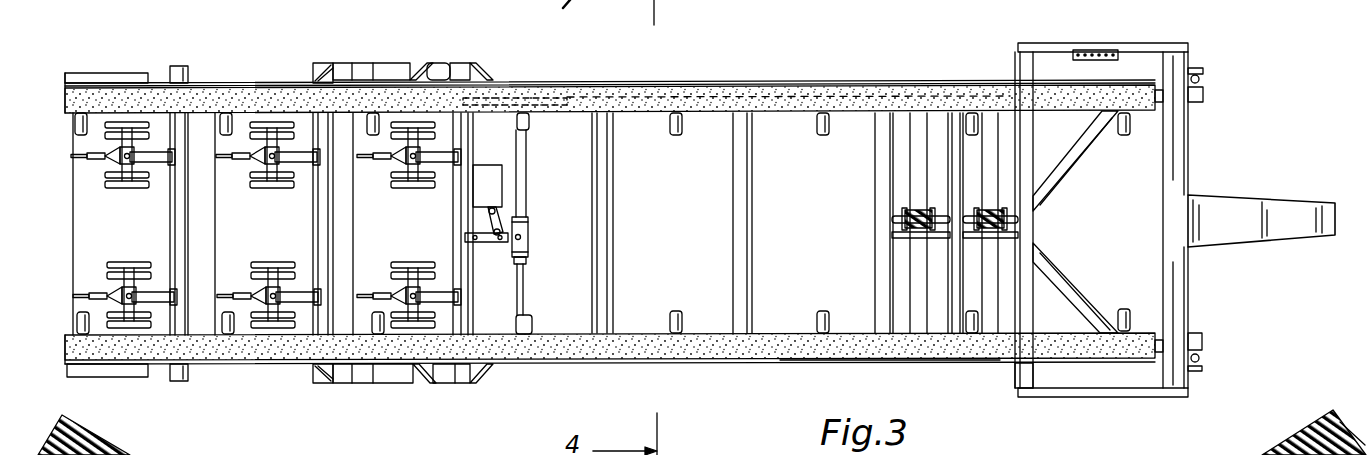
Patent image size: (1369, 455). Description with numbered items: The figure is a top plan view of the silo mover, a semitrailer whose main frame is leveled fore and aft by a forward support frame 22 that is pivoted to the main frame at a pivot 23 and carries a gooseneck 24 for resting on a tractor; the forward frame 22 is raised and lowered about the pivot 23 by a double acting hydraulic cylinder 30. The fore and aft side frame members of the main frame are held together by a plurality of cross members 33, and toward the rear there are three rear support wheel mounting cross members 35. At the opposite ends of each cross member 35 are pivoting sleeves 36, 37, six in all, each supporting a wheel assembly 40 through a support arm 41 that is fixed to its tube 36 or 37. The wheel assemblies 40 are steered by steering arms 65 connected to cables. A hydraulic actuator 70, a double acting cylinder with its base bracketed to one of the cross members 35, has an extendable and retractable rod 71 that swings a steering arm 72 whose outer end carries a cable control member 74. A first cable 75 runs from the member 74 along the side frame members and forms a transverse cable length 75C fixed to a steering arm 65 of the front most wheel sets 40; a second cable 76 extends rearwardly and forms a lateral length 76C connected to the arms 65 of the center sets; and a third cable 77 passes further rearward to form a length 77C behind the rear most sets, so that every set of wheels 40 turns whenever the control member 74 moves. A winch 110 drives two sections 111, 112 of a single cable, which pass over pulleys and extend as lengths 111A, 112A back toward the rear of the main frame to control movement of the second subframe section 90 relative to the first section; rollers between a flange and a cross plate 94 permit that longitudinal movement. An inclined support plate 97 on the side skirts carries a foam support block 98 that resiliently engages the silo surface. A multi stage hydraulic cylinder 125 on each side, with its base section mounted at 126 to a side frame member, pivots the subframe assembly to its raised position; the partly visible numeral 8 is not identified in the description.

The forward support frame 22 is at (1198, 134).
The pivot 23 is at (1023, 395).
The gooseneck 24 is at (1257, 239).
The double acting hydraulic cylinder 30 is at (1205, 78).
The cross members 33 is at (877, 188).
The rear support wheel mounting cross members 35 is at (170, 214).
The pivoting sleeve 36 is at (194, 160).
The pivoting sleeve 37 is at (195, 292).
The wheel assembly 40 is at (285, 112).
The support arm 41 is at (152, 160).
The steering arm 65 is at (78, 156).
The hydraulic actuator 70 is at (493, 219).
The extendable and retractable rod 71 is at (520, 217).
The steering arm 72 is at (507, 243).
The cable control member 74 is at (531, 237).
The cable 75 is at (528, 262).
The second cable 76 is at (525, 275).
The third cable 77 is at (527, 288).
The cable length 75C is at (354, 176).
The cable length 76C is at (216, 222).
The cable length 77C is at (74, 237).
The second subframe section 90 is at (774, 74).
The cross plate 94 is at (124, 453).
The inclined support plate 97 is at (1325, 413).
The support block 98 is at (634, 97).
The winch 110 is at (920, 210).
The cable section 111 is at (910, 124).
The cable length 111A is at (850, 92).
The cable section 112 is at (923, 270).
The cable length 112A is at (877, 348).
The multi stage hydraulic cylinder 125 is at (437, 72).
The base section mounting 126 is at (468, 73).
The ramp element 8 is at (1348, 430).